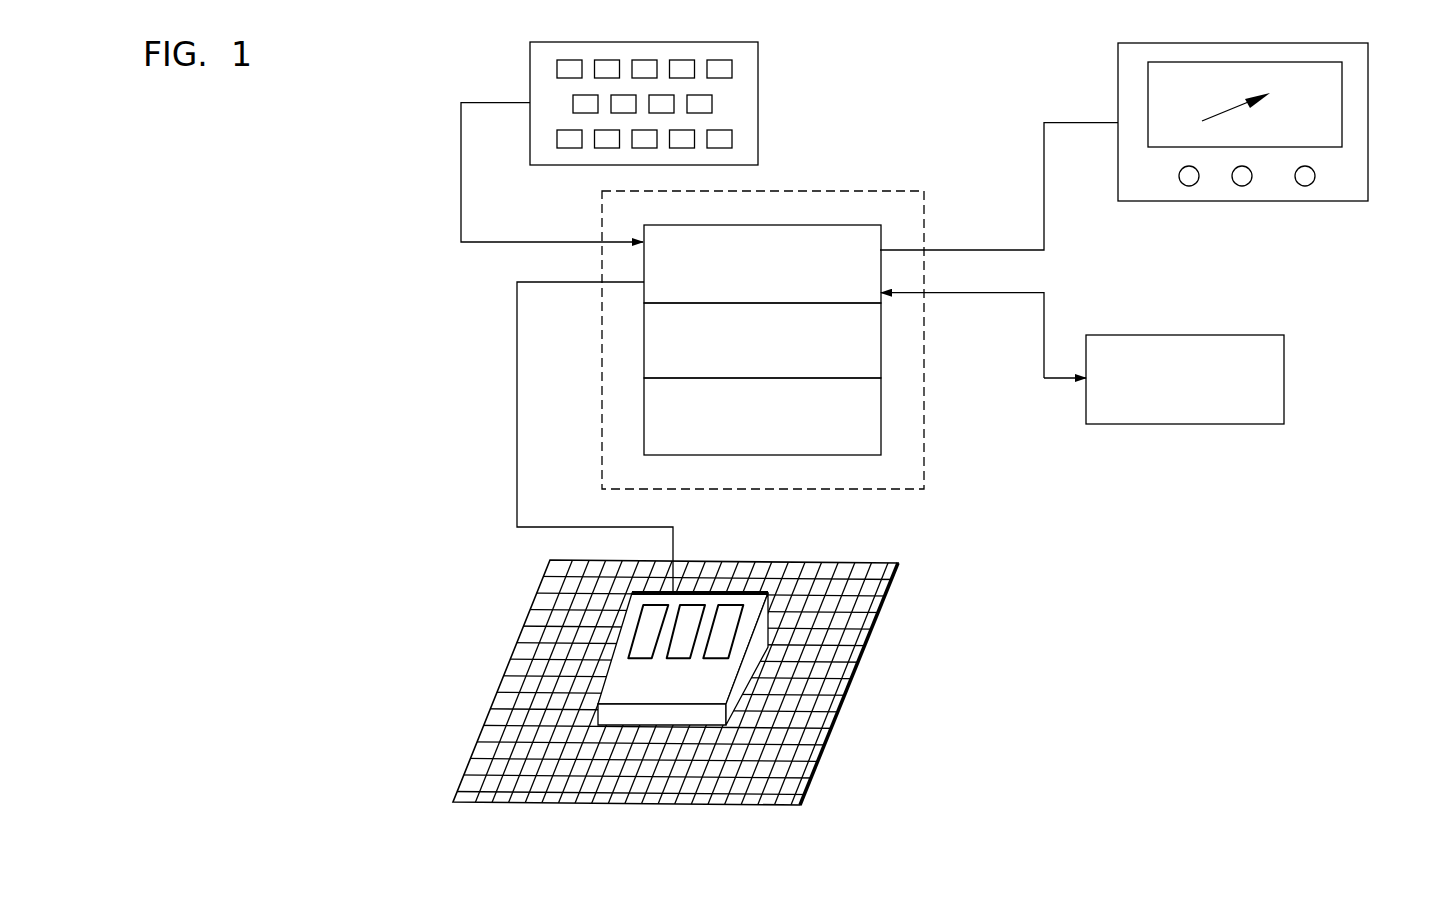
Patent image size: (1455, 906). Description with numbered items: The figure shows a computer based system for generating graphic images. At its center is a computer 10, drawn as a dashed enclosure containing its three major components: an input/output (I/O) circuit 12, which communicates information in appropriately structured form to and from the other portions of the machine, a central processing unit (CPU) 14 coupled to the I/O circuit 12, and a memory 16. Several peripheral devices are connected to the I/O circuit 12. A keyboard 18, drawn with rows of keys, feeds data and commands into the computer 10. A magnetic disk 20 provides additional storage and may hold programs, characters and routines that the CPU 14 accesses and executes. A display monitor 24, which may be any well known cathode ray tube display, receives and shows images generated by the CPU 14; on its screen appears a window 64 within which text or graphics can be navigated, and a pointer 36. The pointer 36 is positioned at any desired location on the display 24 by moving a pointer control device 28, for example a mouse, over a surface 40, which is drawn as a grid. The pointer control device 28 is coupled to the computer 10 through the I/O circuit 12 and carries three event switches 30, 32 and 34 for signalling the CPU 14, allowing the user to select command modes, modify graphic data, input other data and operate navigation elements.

The computer 10 is at (883, 190).
The input/output (I/O) circuit 12 is at (883, 229).
The central processing unit (CPU) 14 is at (882, 343).
The memory 16 is at (882, 418).
The keyboard 18 is at (758, 77).
The magnetic disk 20 is at (1285, 394).
The display monitor 24 is at (1368, 187).
The window 64 is at (1342, 90).
The pointer 36 is at (1220, 110).
The pointer control device 28 is at (712, 578).
The switch 30 is at (640, 645).
The switch 32 is at (688, 617).
The switch 34 is at (730, 625).
The surface 40 is at (840, 710).